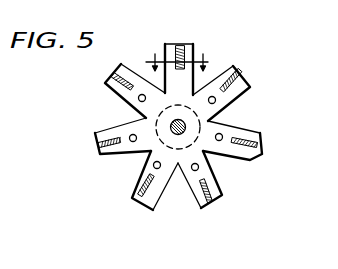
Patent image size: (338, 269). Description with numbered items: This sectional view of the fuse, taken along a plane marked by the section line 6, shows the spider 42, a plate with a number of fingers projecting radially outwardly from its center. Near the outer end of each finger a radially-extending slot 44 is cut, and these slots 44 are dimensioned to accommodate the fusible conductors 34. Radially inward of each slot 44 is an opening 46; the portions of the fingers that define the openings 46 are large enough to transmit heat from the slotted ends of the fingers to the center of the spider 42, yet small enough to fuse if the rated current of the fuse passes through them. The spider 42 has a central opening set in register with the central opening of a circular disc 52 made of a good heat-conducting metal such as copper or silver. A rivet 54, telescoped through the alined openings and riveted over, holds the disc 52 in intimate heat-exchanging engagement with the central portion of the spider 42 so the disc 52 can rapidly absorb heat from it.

The section line 6- 6 is at (178, 63).
The fusible conductor 34 is at (165, 45).
The spider 42 is at (97, 203).
The slot 44 is at (110, 90).
The opening 46 is at (216, 100).
The circular disc 52 is at (146, 117).
The rivet 54 is at (172, 131).